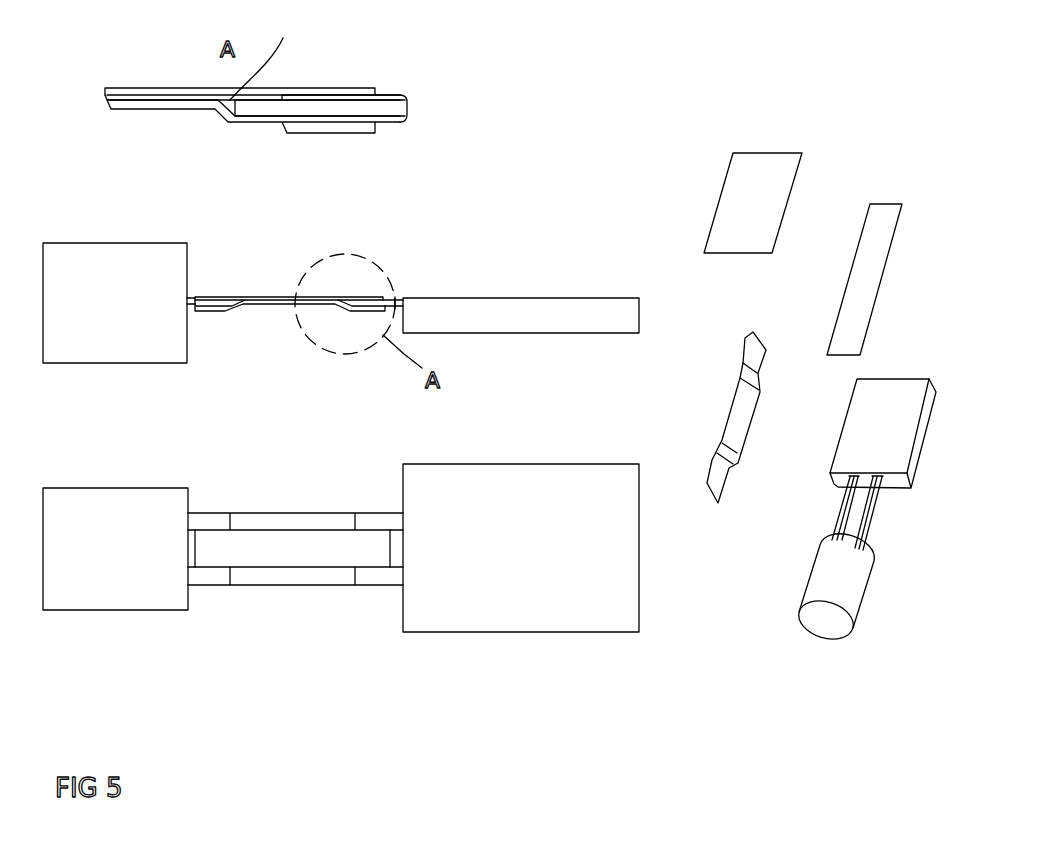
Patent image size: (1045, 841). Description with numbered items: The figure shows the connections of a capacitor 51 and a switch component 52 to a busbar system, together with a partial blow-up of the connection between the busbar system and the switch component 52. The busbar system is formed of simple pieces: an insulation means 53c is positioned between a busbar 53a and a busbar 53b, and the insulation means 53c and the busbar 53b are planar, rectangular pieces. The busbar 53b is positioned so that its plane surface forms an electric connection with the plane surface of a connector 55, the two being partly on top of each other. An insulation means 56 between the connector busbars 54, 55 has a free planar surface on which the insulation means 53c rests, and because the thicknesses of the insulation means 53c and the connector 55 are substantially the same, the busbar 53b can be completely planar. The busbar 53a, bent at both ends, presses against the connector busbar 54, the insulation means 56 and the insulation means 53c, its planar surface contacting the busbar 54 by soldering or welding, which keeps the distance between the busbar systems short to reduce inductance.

The capacitor 51 is at (73, 273).
The switch component 52 is at (616, 323).
The busbar 53a is at (135, 110).
The busbar 53b is at (125, 88).
The insulation means 53c is at (107, 100).
The connector busbar 54 is at (400, 133).
The connector 55 is at (393, 95).
The insulation means 56 is at (412, 108).